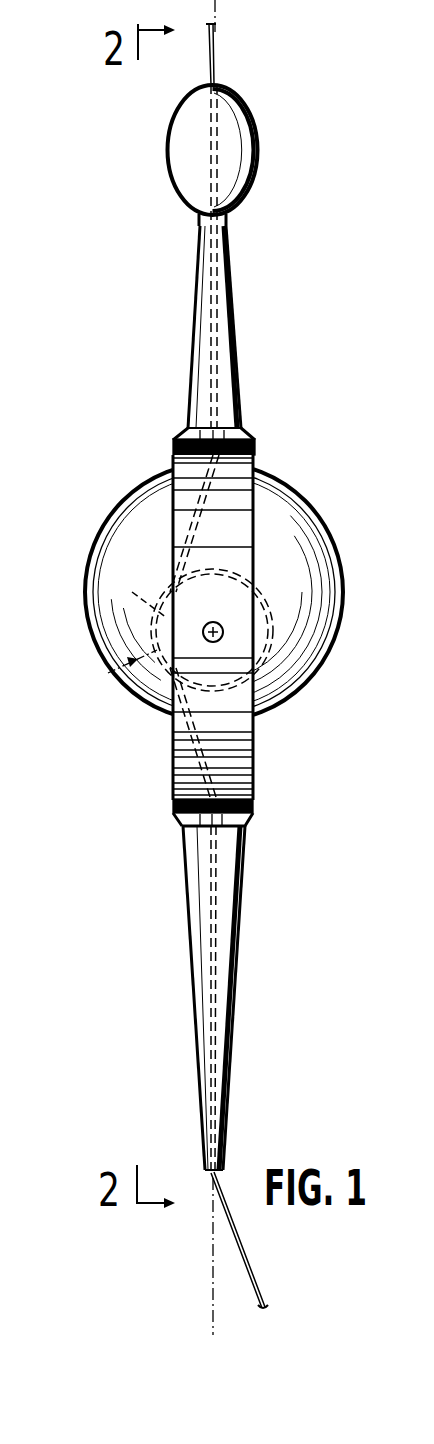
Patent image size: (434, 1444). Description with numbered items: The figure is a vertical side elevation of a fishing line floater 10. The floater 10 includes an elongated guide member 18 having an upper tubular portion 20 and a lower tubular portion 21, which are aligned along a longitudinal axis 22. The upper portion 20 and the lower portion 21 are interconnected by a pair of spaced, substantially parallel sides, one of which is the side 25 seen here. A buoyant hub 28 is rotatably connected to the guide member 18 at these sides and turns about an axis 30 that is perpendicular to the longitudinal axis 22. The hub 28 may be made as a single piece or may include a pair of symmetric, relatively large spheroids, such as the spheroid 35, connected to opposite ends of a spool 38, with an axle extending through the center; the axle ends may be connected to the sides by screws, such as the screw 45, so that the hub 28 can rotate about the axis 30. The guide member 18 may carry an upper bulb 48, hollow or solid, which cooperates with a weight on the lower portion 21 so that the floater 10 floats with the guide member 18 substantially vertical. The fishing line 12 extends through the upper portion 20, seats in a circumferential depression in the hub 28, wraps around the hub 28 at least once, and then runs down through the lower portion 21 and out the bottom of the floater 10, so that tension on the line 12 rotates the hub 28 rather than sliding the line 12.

The floater 10 is at (369, 120).
The fishing line 12 is at (226, 48).
The upper bulb 48 is at (166, 143).
The guide member 18 is at (233, 298).
The upper tubular portion 20 is at (195, 292).
The side 25 is at (227, 490).
The buoyant hub 28 is at (328, 508).
The spheroid 35 is at (318, 557).
The spool 38 is at (139, 590).
The screw 45 is at (266, 614).
The axis 30 is at (233, 613).
The lower tubular portion 21 is at (196, 1030).
The longitudinal axis 22 is at (213, 1292).